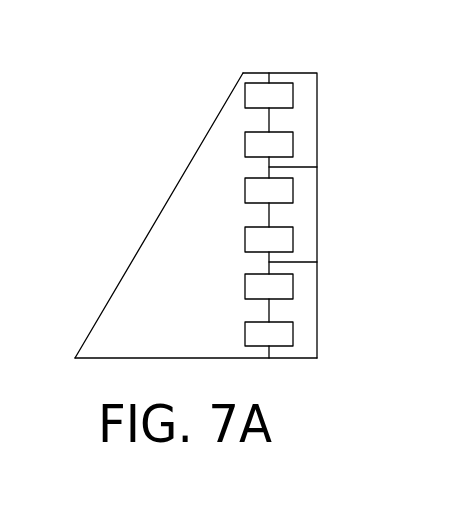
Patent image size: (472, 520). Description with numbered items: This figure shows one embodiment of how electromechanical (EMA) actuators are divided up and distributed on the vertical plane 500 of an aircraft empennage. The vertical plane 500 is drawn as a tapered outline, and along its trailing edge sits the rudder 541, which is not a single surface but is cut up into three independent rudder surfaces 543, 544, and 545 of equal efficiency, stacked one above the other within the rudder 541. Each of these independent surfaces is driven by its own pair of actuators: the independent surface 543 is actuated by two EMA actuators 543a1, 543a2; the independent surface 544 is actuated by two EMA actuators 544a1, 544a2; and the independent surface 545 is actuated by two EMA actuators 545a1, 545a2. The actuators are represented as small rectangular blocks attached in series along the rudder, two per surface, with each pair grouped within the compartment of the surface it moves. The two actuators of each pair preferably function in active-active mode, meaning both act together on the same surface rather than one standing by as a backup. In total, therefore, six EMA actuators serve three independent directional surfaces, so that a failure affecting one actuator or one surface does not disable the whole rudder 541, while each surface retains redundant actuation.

The vertical plane of the empennage 500 is at (107, 305).
The rudder 541 is at (308, 367).
The independent rudder surface 543 is at (260, 299).
The EMA actuator 543a1 is at (257, 337).
The EMA actuator 543a2 is at (257, 288).
The independent rudder surface 544 is at (236, 208).
The EMA actuator 544a1 is at (257, 240).
The EMA actuator 544a2 is at (255, 193).
The independent rudder surface 545 is at (257, 117).
The EMA actuator 545a1 is at (257, 147).
The EMA actuator 545a2 is at (260, 97).